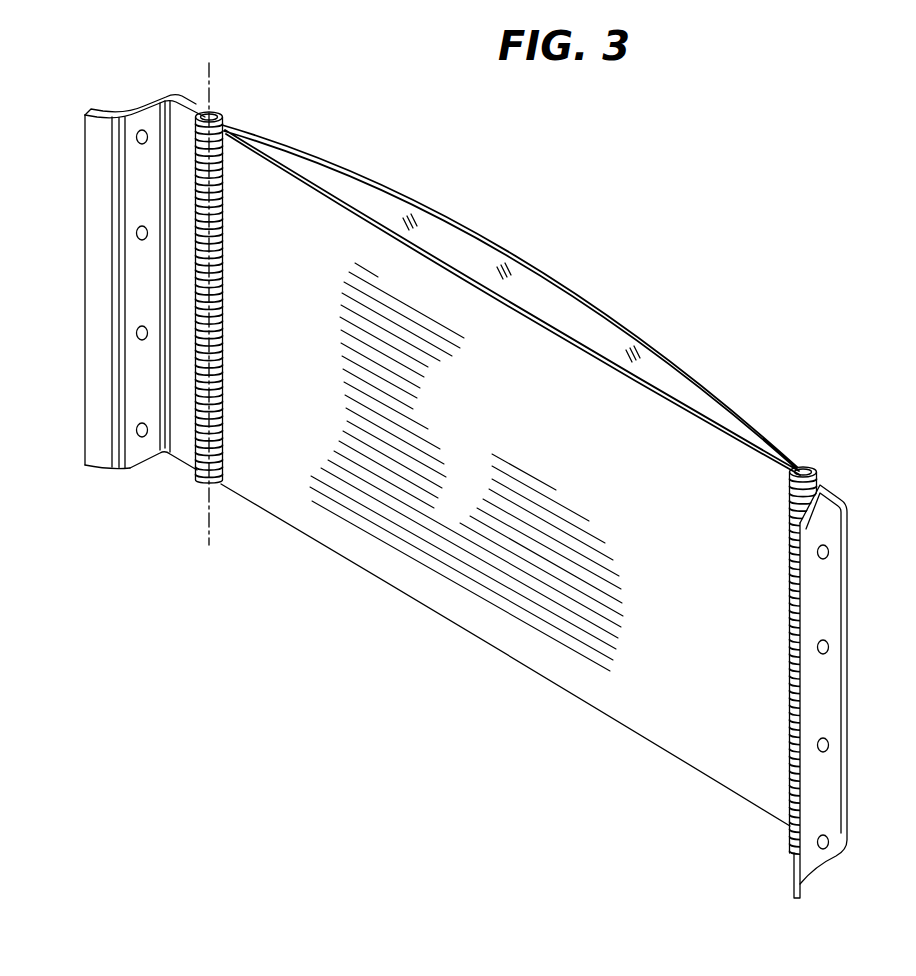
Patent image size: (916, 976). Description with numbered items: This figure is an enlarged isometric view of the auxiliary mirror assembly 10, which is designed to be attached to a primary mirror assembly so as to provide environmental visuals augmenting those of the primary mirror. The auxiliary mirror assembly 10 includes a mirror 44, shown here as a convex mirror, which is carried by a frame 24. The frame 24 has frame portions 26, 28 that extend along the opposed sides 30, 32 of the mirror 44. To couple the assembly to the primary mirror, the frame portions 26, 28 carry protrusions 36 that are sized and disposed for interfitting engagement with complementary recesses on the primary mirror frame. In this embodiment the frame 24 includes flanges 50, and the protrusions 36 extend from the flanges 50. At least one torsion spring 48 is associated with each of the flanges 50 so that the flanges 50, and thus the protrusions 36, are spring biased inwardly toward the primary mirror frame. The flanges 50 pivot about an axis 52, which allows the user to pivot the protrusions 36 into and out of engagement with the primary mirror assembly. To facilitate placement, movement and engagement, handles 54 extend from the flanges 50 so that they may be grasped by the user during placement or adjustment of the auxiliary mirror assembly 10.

The auxiliary mirror assembly 10 is at (723, 290).
The frame 24 is at (238, 122).
The frame portion 26 is at (840, 493).
The frame portion 28 is at (182, 120).
The side 30 is at (800, 468).
The side 32 is at (226, 127).
The protrusion 36 is at (140, 335).
The mirror 44 is at (512, 253).
The torsion spring 48 is at (792, 503).
The flange 50 is at (138, 470).
The axis 52 is at (213, 79).
The handle 54 is at (97, 468).